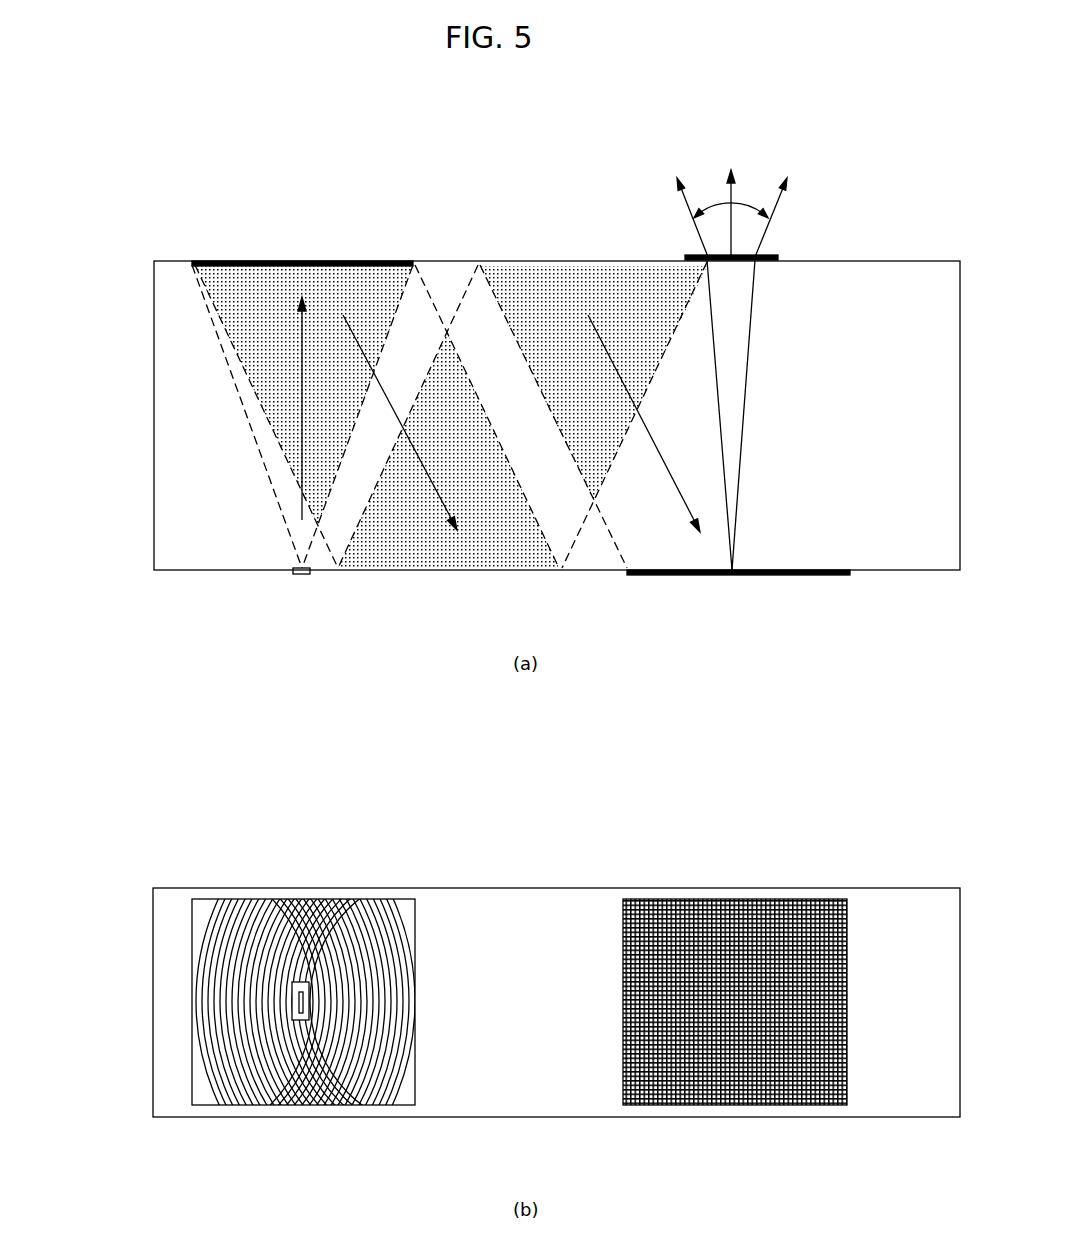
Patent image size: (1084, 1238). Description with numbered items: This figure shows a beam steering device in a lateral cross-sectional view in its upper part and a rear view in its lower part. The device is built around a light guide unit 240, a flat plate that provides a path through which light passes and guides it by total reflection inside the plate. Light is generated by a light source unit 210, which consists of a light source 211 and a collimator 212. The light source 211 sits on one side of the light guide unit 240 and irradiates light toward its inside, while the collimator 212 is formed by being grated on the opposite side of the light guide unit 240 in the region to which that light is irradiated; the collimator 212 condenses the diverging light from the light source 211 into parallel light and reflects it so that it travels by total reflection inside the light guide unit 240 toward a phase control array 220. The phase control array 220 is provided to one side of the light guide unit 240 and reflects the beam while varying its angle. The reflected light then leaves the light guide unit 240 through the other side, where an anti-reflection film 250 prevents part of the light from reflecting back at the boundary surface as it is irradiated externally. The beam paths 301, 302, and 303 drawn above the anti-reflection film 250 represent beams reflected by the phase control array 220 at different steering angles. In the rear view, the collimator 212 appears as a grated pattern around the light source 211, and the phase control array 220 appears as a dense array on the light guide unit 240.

The light source unit 210 is at (98, 280).
The light source 211 is at (302, 568).
The collimator 212 is at (193, 263).
The phase control array 220 is at (830, 575).
The light guide unit 240 is at (913, 290).
The anti-reflection film 250 is at (770, 257).
The beam path 301 is at (731, 197).
The beam path 302 is at (685, 203).
The beam path 303 is at (777, 203).